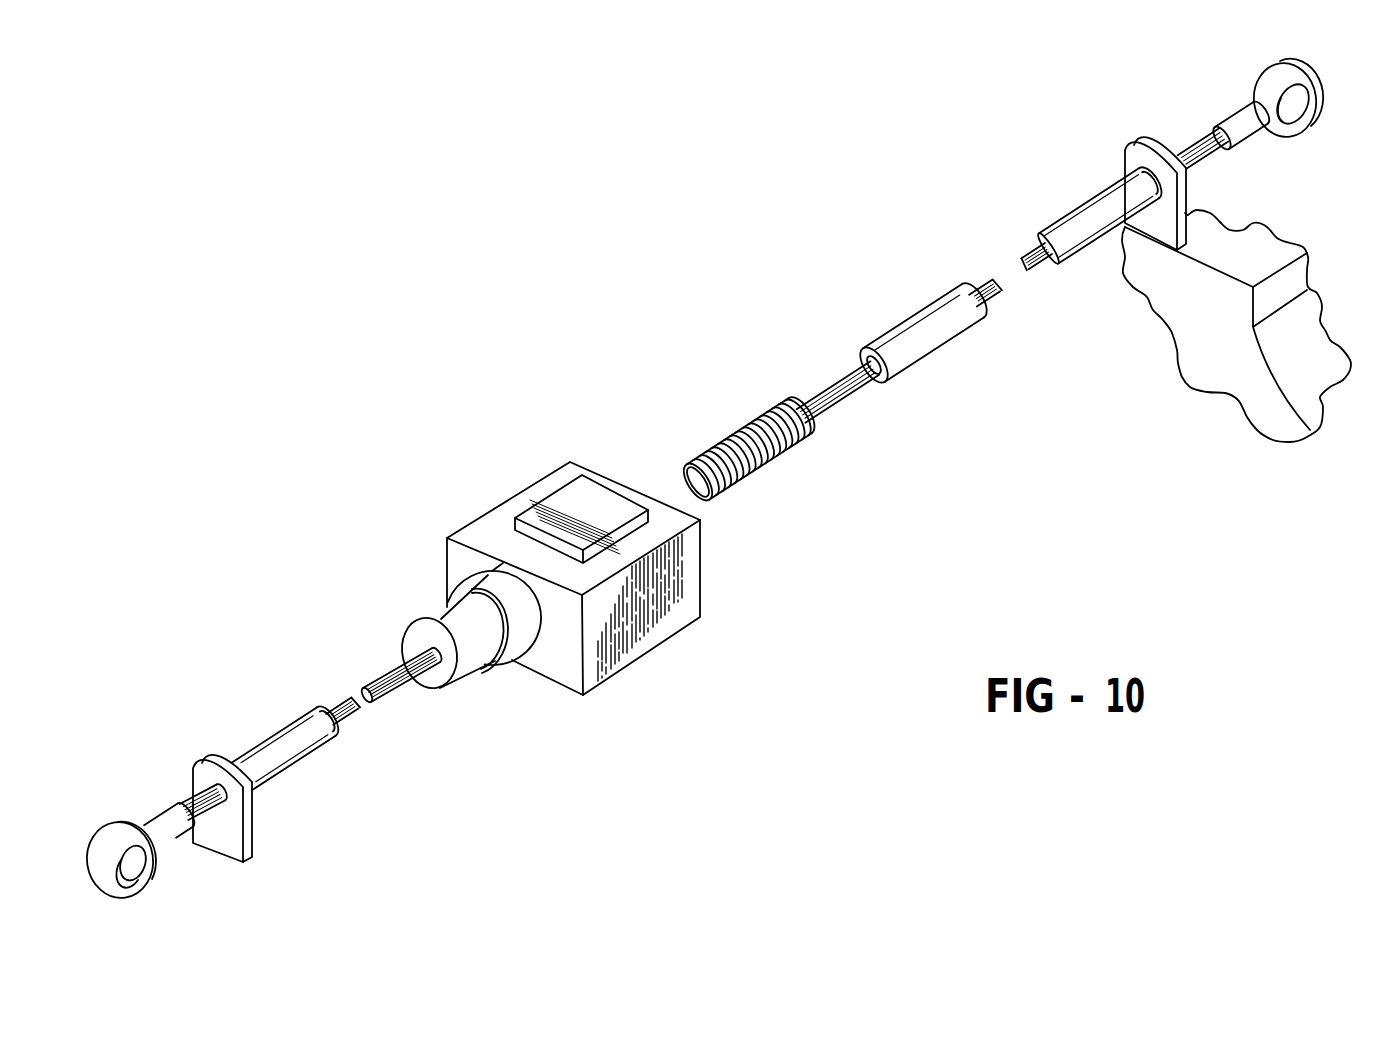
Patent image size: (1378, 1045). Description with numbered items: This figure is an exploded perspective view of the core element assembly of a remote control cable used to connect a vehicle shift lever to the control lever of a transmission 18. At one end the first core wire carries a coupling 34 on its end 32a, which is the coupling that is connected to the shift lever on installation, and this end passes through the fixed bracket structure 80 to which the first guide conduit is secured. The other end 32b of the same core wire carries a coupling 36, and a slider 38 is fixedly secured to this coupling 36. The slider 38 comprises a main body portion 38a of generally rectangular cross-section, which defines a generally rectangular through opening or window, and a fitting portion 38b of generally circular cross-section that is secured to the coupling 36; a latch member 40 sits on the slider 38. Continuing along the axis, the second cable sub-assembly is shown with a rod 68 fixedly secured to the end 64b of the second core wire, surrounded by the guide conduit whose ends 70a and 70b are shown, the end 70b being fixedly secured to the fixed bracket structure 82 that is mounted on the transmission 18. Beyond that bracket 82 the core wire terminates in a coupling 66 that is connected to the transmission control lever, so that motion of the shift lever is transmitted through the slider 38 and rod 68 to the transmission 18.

The transmission 18 is at (1203, 373).
The end of the core wire 32a is at (200, 790).
The end of the core wire 32b is at (380, 678).
The coupling 34 is at (118, 830).
The coupling 36 is at (443, 630).
The slider 38 is at (579, 601).
The main body portion 38a is at (648, 620).
The fitting portion 38b is at (522, 643).
The latch member 40 is at (610, 513).
The end of the core wire 64b is at (828, 387).
The coupling 66 is at (1297, 127).
The rod 68 is at (768, 466).
The end of the guide conduit 70a is at (920, 325).
The end of the guide conduit 70b is at (1077, 223).
The fixed bracket structure 80 is at (255, 815).
The fixed bracket structure 82 is at (1153, 142).